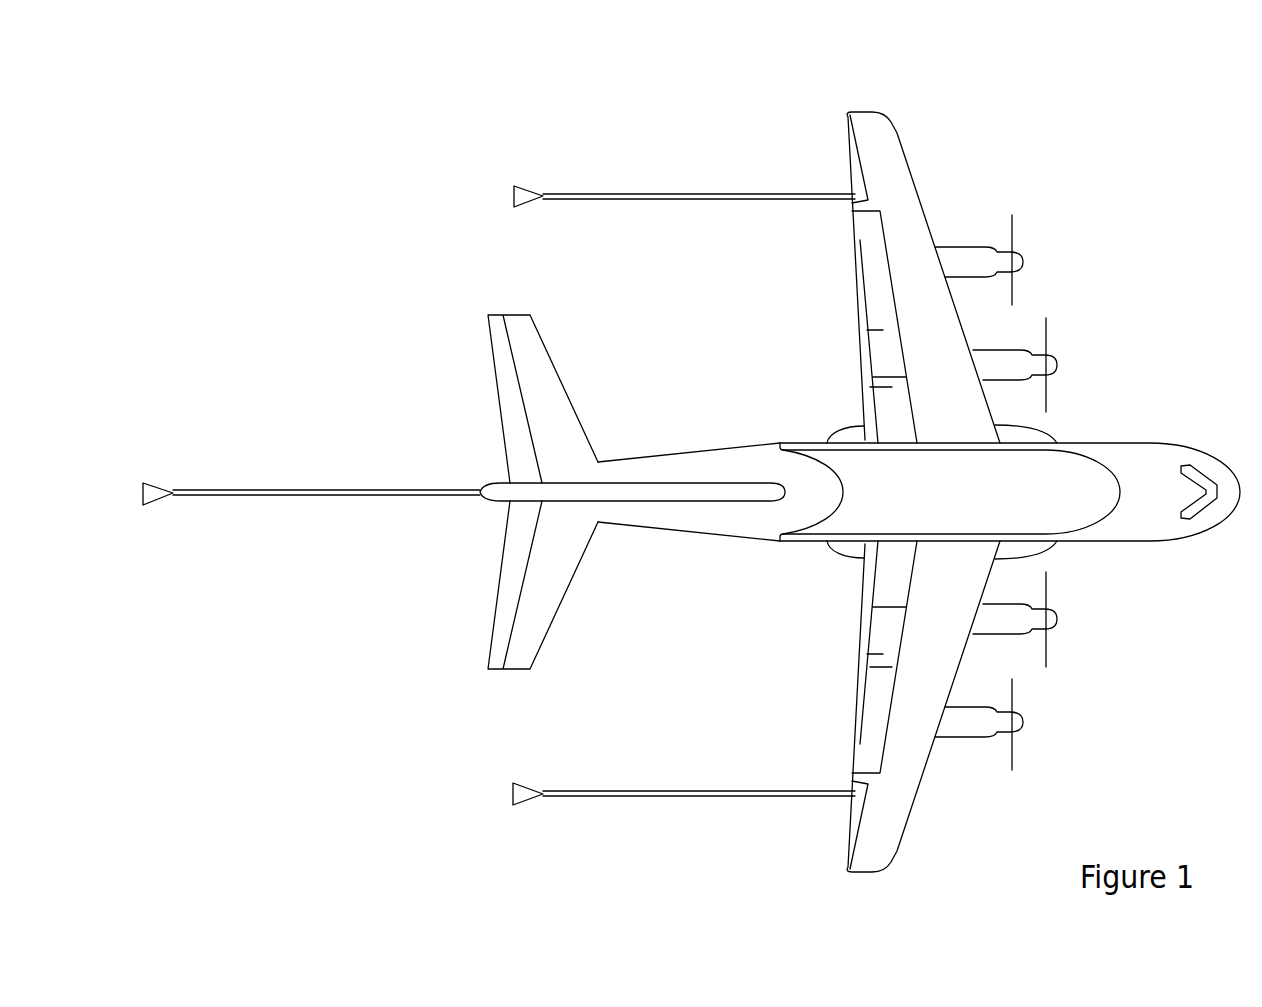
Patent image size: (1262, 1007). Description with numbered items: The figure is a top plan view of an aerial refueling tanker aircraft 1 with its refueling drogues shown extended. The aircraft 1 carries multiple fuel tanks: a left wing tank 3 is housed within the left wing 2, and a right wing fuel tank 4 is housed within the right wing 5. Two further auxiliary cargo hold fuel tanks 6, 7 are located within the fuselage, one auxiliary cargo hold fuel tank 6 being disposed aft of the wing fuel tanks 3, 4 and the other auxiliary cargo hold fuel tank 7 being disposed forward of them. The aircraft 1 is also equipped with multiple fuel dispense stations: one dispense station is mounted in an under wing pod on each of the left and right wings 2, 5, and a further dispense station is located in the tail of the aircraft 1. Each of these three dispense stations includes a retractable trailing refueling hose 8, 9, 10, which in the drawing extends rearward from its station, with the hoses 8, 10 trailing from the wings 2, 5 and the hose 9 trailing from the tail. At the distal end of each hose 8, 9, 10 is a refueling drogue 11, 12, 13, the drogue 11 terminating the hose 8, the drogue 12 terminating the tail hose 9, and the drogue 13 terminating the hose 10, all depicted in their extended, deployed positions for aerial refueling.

The aerial refueling tanker aircraft 1 is at (691, 469).
The left wing 2 is at (887, 159).
The left wing tank 3 is at (918, 253).
The right wing fuel tank 4 is at (938, 650).
The right wing 5 is at (895, 787).
The auxiliary cargo hold fuel tank 6 is at (772, 513).
The auxiliary cargo hold fuel tank 7 is at (1063, 493).
The retractable trailing refueling hose 8 is at (636, 194).
The retractable trailing refueling hose 9 is at (344, 490).
The retractable trailing refueling hose 10 is at (636, 792).
The refueling drogue 11 is at (522, 185).
The refueling drogue 12 is at (147, 482).
The refueling drogue 13 is at (520, 783).